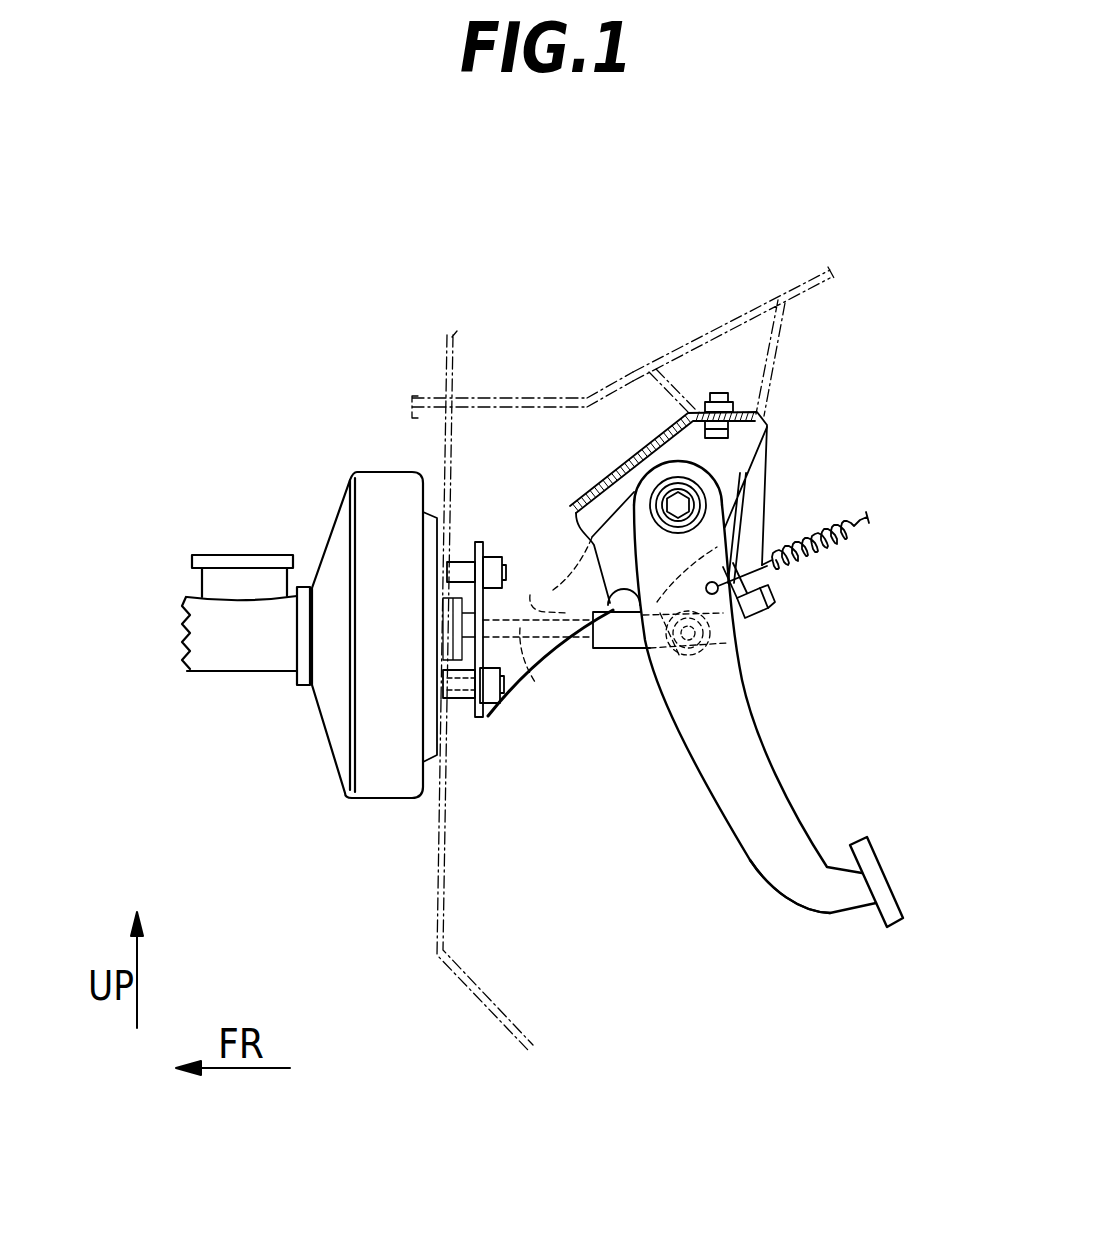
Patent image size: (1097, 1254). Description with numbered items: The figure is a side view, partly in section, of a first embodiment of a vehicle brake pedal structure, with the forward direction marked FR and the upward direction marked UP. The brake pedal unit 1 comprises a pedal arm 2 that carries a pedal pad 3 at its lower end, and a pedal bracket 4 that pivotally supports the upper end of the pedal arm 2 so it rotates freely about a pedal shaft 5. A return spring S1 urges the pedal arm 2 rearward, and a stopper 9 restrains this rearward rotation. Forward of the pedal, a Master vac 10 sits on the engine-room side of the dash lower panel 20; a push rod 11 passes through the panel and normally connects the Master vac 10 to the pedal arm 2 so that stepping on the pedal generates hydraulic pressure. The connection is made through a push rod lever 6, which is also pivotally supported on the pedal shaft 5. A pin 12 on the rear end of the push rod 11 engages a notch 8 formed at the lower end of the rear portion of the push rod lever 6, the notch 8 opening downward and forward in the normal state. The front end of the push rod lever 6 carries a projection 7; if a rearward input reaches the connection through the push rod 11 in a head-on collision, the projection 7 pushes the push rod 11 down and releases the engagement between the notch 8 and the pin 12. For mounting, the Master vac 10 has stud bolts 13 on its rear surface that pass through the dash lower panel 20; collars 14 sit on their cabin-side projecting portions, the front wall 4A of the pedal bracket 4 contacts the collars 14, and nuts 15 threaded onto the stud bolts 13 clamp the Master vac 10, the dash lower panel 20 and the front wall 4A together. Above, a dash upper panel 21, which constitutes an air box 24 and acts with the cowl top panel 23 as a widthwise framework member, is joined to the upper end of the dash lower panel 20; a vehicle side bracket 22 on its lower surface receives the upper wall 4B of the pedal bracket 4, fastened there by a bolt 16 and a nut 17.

The brake pedal unit 1 is at (780, 711).
The pedal arm 2 is at (793, 823).
The pedal pad 3 is at (870, 862).
The pedal bracket 4 is at (767, 470).
The front wall 4A is at (470, 608).
The upper wall 4B is at (753, 423).
The pedal shaft 5 is at (684, 510).
The push rod lever 6 is at (618, 495).
The projection 7 is at (560, 597).
The notch 8 is at (683, 658).
The stopper 9 is at (770, 593).
The Master vac 10 is at (358, 813).
The push rod 11 is at (535, 672).
The pin 12 is at (735, 623).
The stud bolts 13 is at (487, 546).
The collars 14 is at (460, 562).
The nuts 15 is at (497, 557).
The bolt 16 is at (727, 435).
The nut 17 is at (723, 390).
The dash lower panel 20 is at (435, 907).
The dash upper panel 21 is at (590, 404).
The vehicle side bracket 22 is at (783, 330).
The cowl top panel 23 is at (443, 358).
The air box 24 is at (560, 331).
The return spring S1 is at (827, 553).